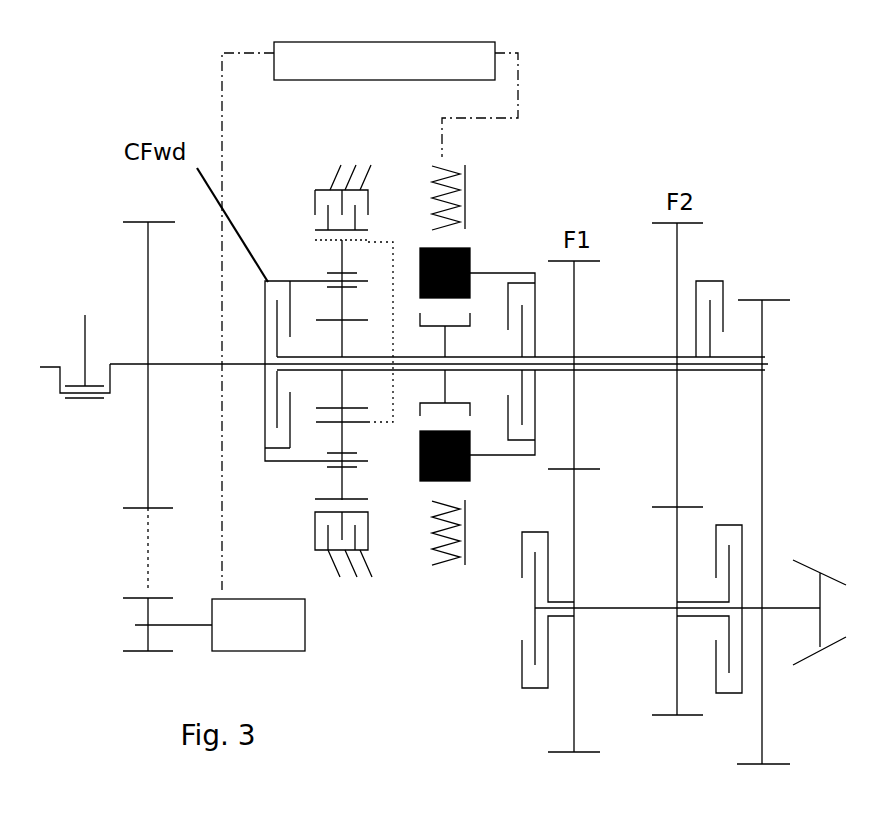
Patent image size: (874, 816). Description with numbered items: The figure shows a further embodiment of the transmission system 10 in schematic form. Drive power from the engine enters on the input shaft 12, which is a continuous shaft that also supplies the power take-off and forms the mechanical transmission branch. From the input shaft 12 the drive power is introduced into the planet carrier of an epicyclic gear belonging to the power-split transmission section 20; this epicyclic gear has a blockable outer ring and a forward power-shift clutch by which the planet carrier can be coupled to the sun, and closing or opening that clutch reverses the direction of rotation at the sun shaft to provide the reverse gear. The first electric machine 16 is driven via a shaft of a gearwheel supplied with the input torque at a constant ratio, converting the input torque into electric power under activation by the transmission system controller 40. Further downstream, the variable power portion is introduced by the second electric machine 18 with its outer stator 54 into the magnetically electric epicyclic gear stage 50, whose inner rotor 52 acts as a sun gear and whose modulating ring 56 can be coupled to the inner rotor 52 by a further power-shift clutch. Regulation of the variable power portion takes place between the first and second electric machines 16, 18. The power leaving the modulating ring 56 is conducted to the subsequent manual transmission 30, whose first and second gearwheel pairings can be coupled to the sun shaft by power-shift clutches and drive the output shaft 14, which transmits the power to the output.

The transmission system 10 is at (785, 181).
The input shaft 12 is at (134, 361).
The output shaft 14 is at (775, 610).
The first electric machine 16 is at (220, 625).
The second electric machine 18 is at (465, 166).
The power-split transmission section 20 is at (364, 662).
The manual transmission 30 is at (719, 207).
The transmission system controller 40 is at (370, 316).
The magnetically electric epicyclic gear stage 50 is at (454, 613).
The inner rotor 52 is at (466, 320).
The outer stator 54 is at (445, 548).
The modulating ring 56 is at (465, 248).